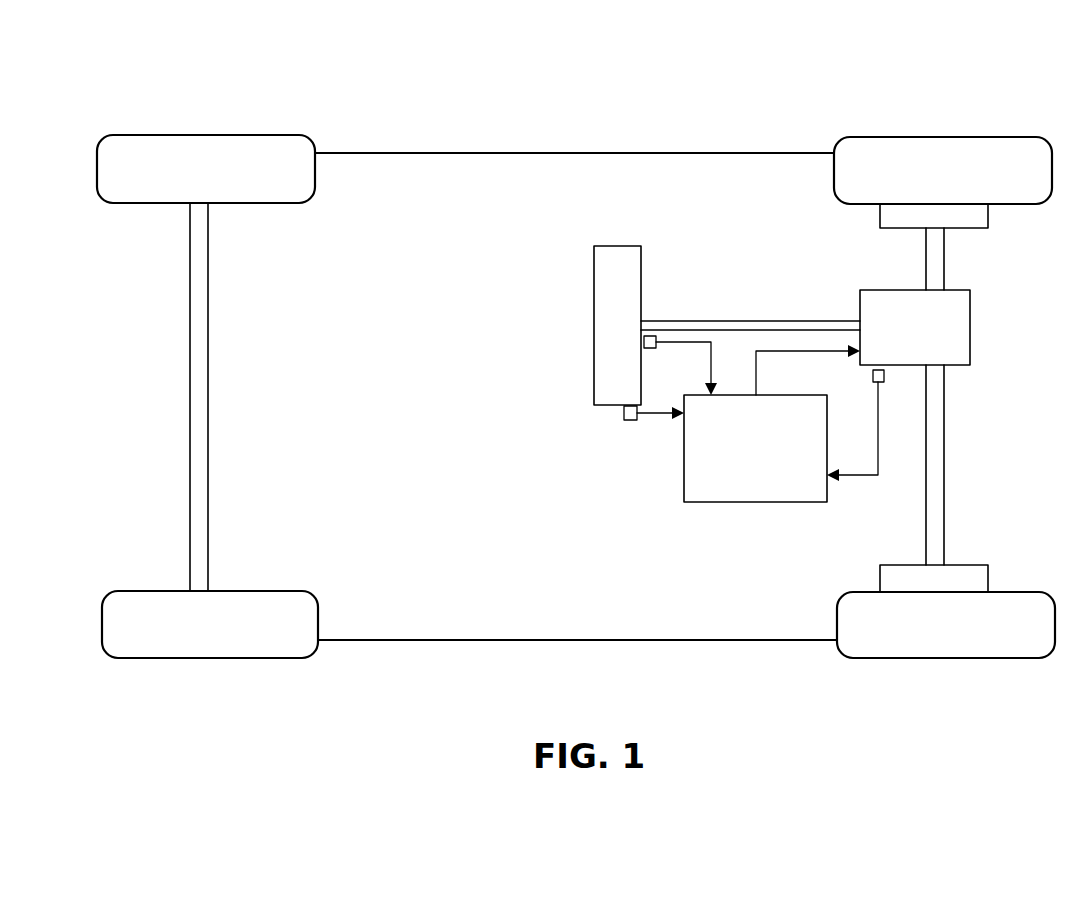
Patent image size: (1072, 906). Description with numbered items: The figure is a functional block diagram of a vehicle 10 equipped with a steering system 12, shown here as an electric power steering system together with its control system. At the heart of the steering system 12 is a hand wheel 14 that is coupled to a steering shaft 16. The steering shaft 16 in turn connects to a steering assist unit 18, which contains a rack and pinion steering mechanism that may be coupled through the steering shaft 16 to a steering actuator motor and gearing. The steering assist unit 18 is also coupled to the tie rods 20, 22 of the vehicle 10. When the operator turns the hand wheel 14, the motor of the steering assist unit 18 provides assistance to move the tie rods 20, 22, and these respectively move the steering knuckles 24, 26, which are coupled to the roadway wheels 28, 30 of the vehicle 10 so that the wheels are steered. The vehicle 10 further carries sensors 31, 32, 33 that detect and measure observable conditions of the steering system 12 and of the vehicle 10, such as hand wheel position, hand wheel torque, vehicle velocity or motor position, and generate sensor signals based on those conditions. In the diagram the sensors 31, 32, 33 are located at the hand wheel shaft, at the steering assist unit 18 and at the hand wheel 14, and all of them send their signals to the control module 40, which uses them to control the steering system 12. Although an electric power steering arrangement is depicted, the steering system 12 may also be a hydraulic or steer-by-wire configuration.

The vehicle 10 is at (616, 62).
The steering system 12 is at (722, 222).
The hand wheel 14 is at (615, 246).
The steering shaft 16 is at (724, 320).
The steering assist unit 18 is at (972, 324).
The tie rod 20 is at (946, 274).
The tie rod 22 is at (947, 435).
The steering knuckle 24 is at (880, 208).
The steering knuckle 26 is at (908, 563).
The roadway wheel 28 is at (981, 136).
The roadway wheel 30 is at (996, 590).
The sensor 31 is at (648, 350).
The sensor 32 is at (886, 378).
The sensor 33 is at (628, 422).
The control module 40 is at (775, 395).